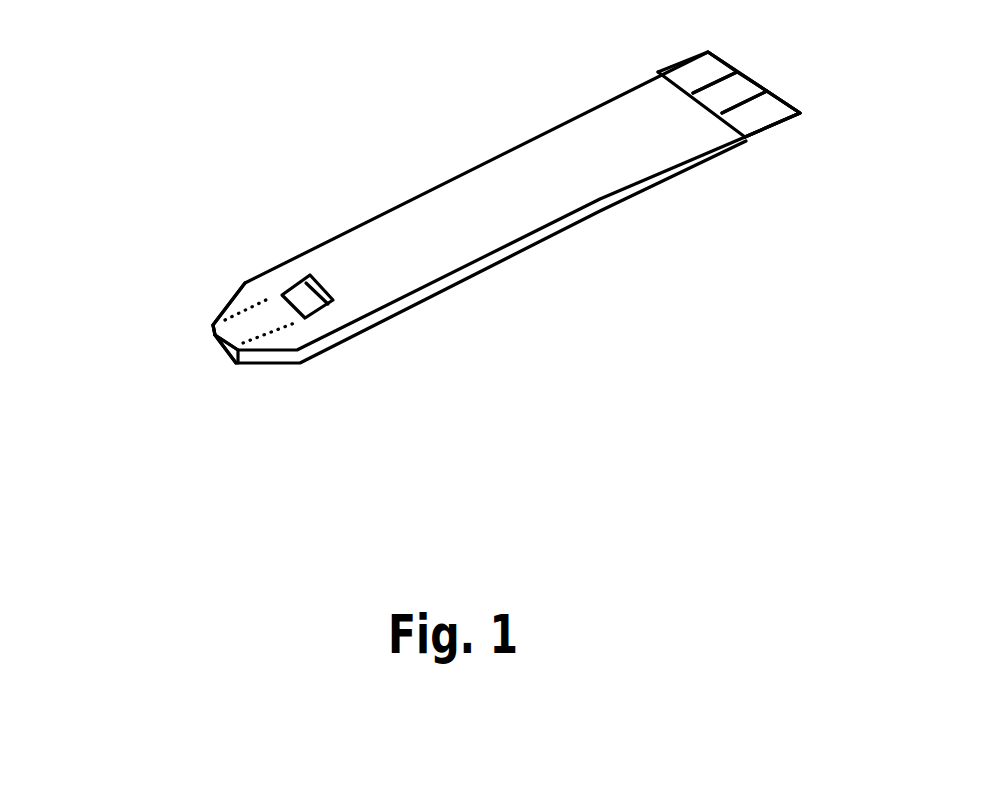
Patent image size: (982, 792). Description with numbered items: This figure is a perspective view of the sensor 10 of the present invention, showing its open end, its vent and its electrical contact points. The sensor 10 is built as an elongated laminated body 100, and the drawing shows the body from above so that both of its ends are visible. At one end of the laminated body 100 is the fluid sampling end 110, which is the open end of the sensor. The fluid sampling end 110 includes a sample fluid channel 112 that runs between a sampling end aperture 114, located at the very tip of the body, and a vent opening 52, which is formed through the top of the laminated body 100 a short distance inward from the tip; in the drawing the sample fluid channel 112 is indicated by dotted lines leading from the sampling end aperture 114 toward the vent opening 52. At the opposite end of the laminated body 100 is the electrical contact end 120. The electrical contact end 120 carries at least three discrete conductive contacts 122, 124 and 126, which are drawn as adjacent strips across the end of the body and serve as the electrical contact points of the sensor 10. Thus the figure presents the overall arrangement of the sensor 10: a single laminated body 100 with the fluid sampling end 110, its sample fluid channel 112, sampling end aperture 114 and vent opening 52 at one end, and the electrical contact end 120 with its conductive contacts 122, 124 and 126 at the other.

The sensor 10 is at (300, 52).
The laminated body 100 is at (532, 139).
The fluid sampling end 110 is at (214, 336).
The sample fluid channel 112 is at (267, 313).
The sampling end aperture 114 is at (217, 340).
The vent opening 52 is at (302, 290).
The electrical contact end 120 is at (760, 142).
The conductive contact 122 is at (706, 67).
The conductive contact 124 is at (734, 92).
The conductive contact 126 is at (755, 107).